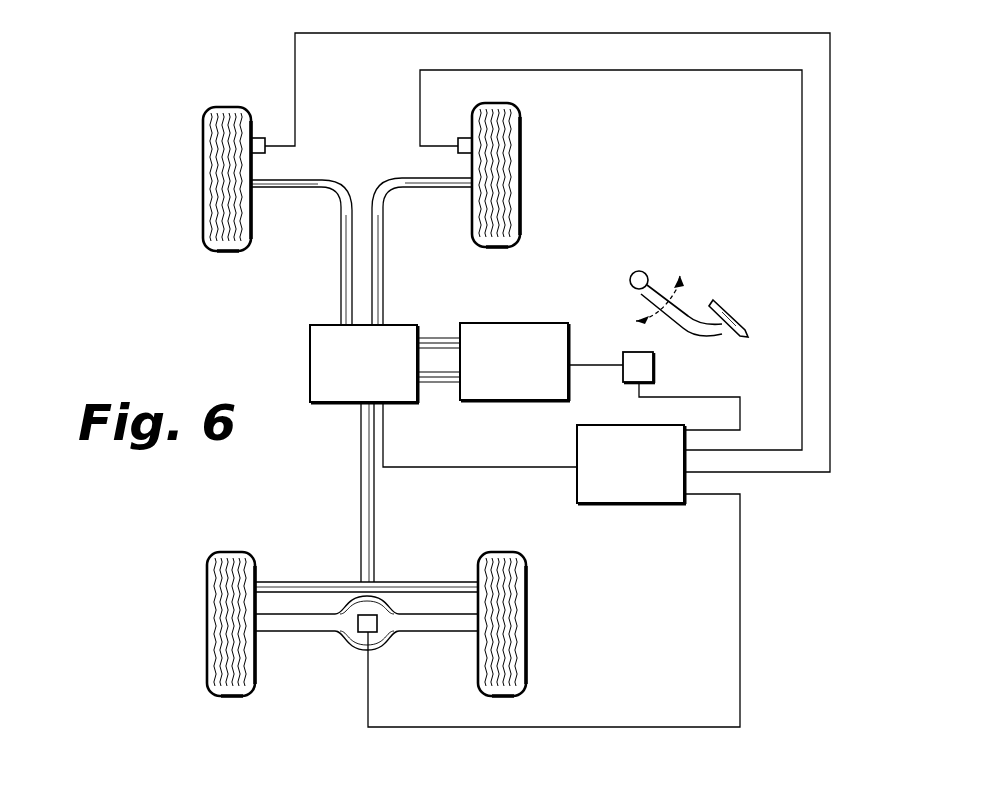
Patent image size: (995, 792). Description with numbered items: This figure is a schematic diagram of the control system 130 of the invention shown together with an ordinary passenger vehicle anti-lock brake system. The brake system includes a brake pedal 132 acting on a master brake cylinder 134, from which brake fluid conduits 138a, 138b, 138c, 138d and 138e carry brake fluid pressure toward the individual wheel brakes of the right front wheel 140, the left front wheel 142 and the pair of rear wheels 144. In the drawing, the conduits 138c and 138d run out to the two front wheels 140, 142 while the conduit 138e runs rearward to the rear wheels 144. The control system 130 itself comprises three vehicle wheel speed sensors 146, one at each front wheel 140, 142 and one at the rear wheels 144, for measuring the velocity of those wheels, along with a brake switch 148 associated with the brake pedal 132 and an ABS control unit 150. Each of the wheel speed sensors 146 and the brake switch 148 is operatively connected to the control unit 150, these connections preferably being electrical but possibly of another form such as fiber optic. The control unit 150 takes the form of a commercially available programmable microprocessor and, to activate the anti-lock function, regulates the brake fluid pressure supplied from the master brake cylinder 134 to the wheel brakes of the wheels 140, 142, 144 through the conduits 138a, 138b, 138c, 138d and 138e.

The control system 130 is at (160, 120).
The brake pedal 132 is at (682, 312).
The master brake cylinder 134 is at (546, 323).
The brake fluid conduit 138a is at (447, 384).
The brake fluid conduit 138b is at (435, 337).
The brake fluid conduit 138c is at (385, 270).
The brake fluid conduit 138d is at (340, 270).
The brake fluid conduit 138e is at (374, 500).
The right front wheel 140 is at (520, 187).
The left front wheel 142 is at (203, 178).
The rear wheels 144 is at (207, 634).
The vehicle wheel speed sensors 146 is at (256, 136).
The brake switch 148 is at (655, 366).
The ABS control unit 150 is at (665, 496).